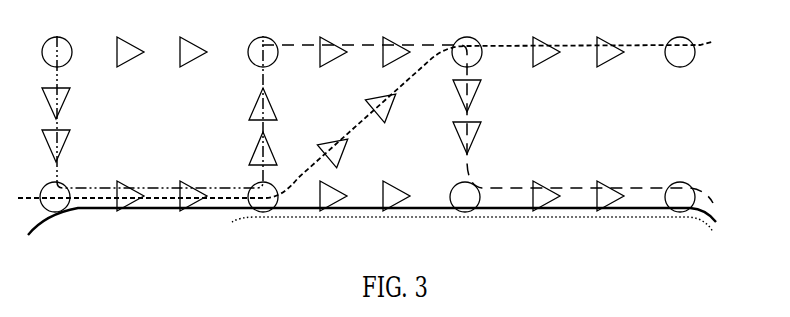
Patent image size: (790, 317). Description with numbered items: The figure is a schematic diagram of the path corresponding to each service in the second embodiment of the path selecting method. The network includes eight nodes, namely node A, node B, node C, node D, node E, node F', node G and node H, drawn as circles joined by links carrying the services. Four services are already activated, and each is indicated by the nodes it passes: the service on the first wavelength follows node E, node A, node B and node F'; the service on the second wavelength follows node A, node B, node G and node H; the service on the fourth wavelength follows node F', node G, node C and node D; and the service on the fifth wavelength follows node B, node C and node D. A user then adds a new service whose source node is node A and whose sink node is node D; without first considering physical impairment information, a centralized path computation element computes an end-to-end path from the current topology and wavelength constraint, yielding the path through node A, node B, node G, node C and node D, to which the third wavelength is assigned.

The node A is at (55, 209).
The node B is at (263, 209).
The node C is at (465, 209).
The node D is at (680, 209).
The node E is at (40, 16).
The node F F' is at (263, 42).
The node G is at (467, 43).
The node H is at (680, 43).